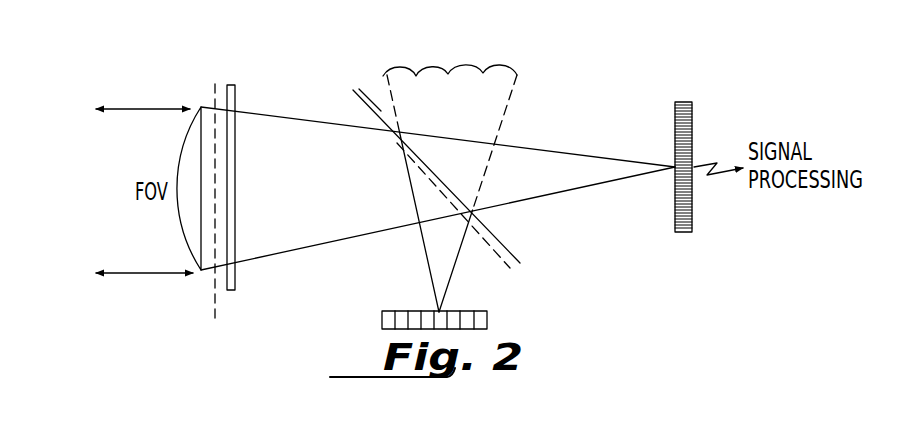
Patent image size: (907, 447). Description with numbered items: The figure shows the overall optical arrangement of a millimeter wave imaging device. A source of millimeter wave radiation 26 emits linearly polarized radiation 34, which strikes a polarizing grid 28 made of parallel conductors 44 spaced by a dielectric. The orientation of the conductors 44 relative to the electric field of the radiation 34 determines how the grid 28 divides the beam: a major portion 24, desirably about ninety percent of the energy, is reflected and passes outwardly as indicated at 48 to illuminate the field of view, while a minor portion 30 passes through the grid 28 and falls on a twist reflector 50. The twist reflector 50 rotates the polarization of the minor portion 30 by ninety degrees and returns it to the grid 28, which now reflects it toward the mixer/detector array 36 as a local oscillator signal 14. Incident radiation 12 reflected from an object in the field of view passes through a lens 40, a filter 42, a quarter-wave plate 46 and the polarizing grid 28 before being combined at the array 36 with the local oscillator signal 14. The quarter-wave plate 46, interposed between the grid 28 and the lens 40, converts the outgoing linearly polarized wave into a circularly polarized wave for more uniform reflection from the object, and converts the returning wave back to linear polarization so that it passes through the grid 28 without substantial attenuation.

The incident radiation 12 is at (174, 100).
The local oscillator signal 14 is at (560, 149).
The major portion 24 is at (140, 276).
The source of millimeter wave radiation 26 is at (488, 319).
The polarizing grid 28 is at (366, 92).
The minor portion 30 is at (473, 107).
The linearly polarized radiation 34 is at (436, 262).
The mixer/detector array 36 is at (681, 100).
The lens 40 is at (186, 150).
The filter 42 is at (216, 84).
The conductors 44 is at (382, 110).
The quarter-wave plate 46 is at (235, 100).
The outgoing illumination 48 is at (97, 268).
The twist reflector 50 is at (497, 65).